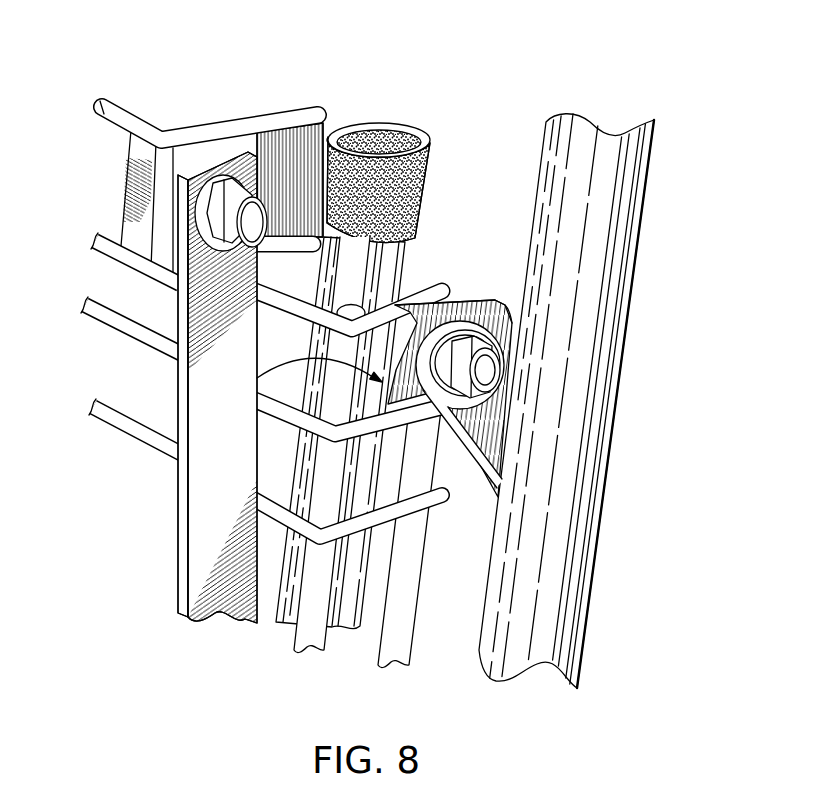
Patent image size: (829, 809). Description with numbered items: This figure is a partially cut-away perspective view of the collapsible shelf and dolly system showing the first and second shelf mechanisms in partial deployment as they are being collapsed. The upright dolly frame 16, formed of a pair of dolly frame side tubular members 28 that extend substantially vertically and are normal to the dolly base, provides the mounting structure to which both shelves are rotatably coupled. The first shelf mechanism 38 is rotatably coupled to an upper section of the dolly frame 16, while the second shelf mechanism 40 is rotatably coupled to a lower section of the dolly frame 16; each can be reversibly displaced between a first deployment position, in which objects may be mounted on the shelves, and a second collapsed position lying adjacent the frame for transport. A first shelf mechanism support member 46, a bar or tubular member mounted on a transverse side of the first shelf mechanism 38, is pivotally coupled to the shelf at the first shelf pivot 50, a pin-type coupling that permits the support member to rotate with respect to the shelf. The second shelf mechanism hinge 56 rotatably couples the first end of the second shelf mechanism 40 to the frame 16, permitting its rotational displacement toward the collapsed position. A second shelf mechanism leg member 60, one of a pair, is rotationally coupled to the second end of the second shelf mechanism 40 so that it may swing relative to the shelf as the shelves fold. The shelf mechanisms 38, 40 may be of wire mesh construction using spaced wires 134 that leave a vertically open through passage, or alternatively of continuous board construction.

The dolly frame 16 is at (640, 243).
The dolly frame side tubular member 28 is at (620, 358).
The first shelf mechanism 38 is at (253, 111).
The second shelf mechanism 40 is at (282, 648).
The first shelf mechanism support member 46 is at (177, 578).
The first shelf pivot 50 is at (253, 225).
The second shelf mechanism hinge 56 is at (482, 474).
The second shelf mechanism leg member 60 is at (406, 250).
The fence rails 134 is at (112, 270).